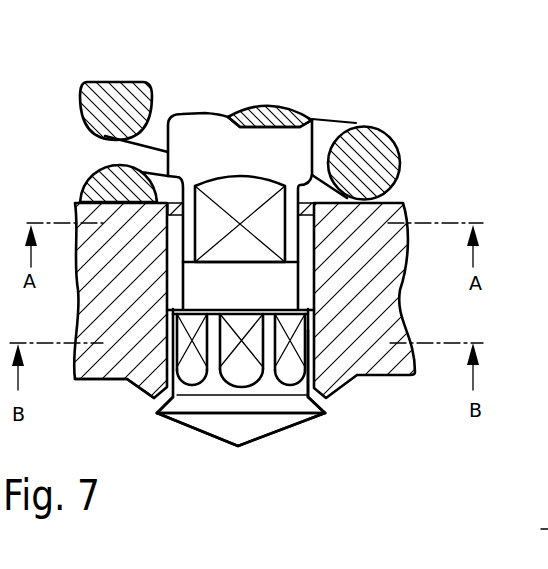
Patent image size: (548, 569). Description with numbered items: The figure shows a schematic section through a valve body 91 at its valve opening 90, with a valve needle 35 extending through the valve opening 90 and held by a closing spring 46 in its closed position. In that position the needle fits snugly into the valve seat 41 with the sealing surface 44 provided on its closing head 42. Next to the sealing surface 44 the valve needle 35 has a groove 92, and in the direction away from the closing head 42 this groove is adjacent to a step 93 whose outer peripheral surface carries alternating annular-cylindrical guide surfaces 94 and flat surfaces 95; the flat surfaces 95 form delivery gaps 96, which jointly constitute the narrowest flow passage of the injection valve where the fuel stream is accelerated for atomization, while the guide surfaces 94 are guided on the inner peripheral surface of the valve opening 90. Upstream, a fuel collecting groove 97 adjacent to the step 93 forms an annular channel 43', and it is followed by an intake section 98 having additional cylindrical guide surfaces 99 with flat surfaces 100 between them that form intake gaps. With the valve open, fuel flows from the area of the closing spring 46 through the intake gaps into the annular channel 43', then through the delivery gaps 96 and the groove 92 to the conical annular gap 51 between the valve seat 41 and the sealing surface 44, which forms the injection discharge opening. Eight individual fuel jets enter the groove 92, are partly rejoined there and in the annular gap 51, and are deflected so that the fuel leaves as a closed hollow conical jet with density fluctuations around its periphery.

The valve needle 35 is at (290, 153).
The annular channel 43' is at (267, 115).
The closing spring 46 is at (364, 157).
The valve opening 90 is at (163, 175).
The flat surfaces 100 is at (85, 190).
The intake section 98 is at (388, 203).
The fuel collecting groove 97 is at (318, 222).
The cylindrical guide surfaces 99 is at (207, 233).
The valve body 91 is at (110, 306).
The annular gap 51 is at (105, 379).
The flat surfaces 95 is at (160, 415).
The step 93 is at (333, 360).
The valve seat 41 is at (333, 414).
The sealing surface 44 is at (290, 402).
The closing head 42 is at (252, 421).
The groove 92 is at (193, 370).
The guide surfaces 94 is at (270, 355).
The delivery gaps 96 is at (531, 531).